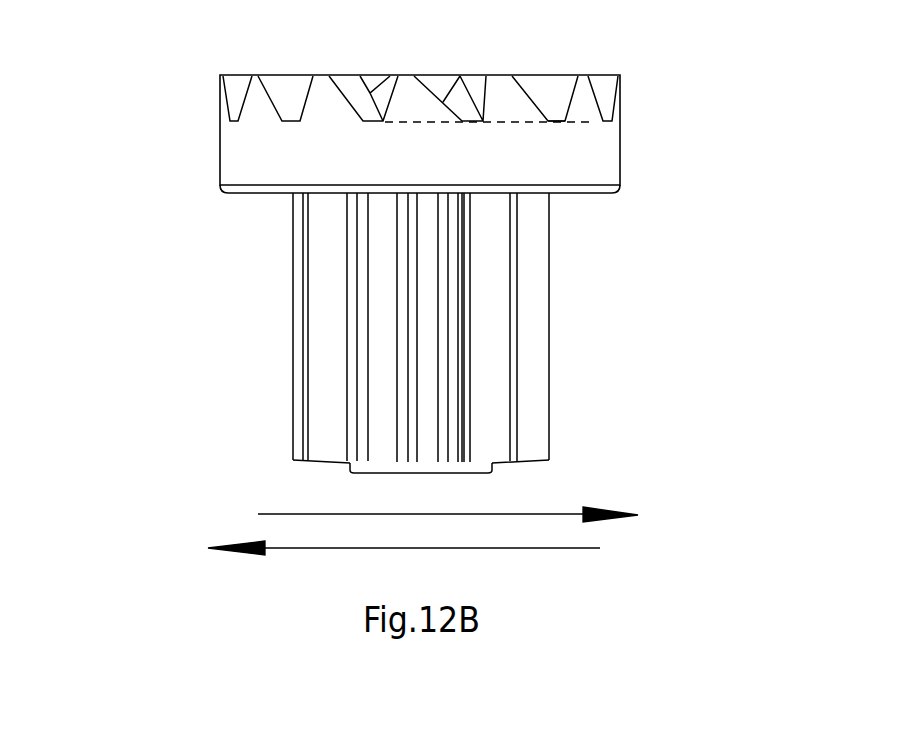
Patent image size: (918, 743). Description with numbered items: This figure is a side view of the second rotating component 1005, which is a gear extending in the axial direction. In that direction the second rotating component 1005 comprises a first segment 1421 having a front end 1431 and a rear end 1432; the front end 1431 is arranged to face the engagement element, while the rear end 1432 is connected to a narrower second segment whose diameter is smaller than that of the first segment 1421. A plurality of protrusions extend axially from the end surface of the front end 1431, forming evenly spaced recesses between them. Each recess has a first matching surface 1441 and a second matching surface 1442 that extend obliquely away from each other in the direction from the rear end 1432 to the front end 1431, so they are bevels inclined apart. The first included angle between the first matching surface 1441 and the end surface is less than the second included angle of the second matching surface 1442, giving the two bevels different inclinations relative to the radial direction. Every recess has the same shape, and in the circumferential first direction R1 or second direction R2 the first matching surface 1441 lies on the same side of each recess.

The second rotating component 1005 is at (712, 102).
The first segment 1421 is at (226, 153).
The front end 1431 is at (221, 117).
The rear end 1432 is at (222, 186).
The first matching surface 1441 is at (452, 122).
The second matching surface 1442 is at (483, 101).
The first direction R1 is at (448, 500).
The second direction R2 is at (404, 564).